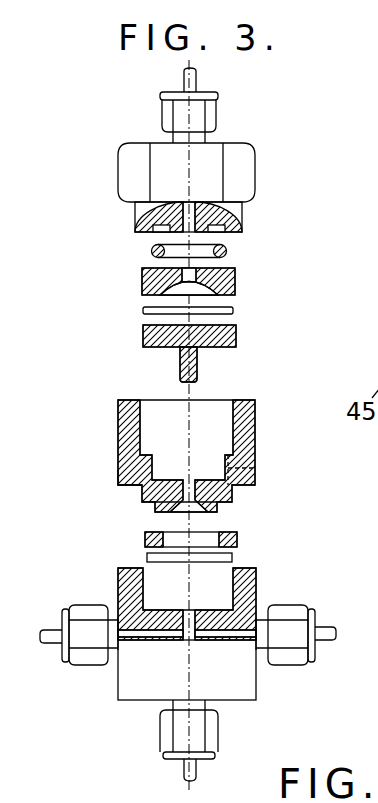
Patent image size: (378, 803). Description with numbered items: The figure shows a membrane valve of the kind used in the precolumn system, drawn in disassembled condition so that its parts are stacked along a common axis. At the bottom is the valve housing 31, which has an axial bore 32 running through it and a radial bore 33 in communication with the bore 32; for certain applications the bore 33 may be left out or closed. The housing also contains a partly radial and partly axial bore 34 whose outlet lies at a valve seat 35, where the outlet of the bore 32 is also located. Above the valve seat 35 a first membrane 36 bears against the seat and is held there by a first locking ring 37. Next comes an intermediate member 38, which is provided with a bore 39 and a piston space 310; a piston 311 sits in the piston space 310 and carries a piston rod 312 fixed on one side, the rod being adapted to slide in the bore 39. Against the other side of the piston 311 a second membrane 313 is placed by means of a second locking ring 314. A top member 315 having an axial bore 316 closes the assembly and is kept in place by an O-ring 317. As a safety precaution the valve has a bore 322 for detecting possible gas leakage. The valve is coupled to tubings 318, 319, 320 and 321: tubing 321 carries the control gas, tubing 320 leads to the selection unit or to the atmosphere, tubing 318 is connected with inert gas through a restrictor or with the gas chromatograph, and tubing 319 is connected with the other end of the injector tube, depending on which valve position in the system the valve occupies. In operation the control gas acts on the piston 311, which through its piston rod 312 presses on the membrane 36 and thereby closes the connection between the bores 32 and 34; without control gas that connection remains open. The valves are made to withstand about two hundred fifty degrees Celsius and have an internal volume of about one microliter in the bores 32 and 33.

The tubing 321 is at (197, 76).
The top member 315 is at (255, 172).
The axial bore 316 is at (135, 222).
The O-ring 317 is at (150, 254).
The locking ring 314 is at (236, 271).
The membrane 313 is at (233, 310).
The piston 311 is at (236, 336).
The piston rod 312 is at (182, 356).
The intermediate member 38 is at (256, 414).
The bore 322 is at (254, 470).
The piston space 310 is at (119, 478).
The bore 39 is at (152, 503).
The locking ring 37 is at (238, 532).
The membrane 36 is at (233, 554).
The valve seat 35 is at (182, 606).
The tubing 320 is at (47, 629).
The bore 34 is at (98, 646).
The axial bore 32 is at (168, 608).
The base block 31 is at (126, 702).
The radial bore 33 is at (233, 636).
The tubing 318 is at (345, 636).
The tubing 319 is at (176, 756).